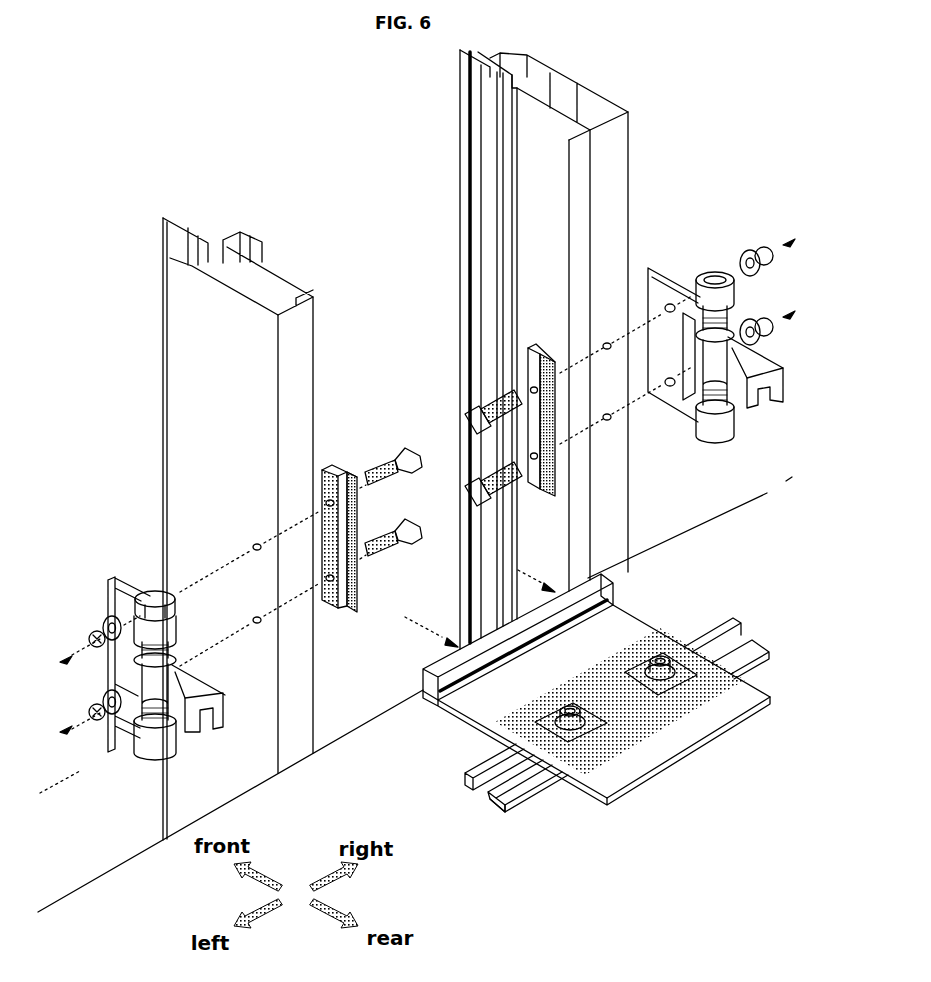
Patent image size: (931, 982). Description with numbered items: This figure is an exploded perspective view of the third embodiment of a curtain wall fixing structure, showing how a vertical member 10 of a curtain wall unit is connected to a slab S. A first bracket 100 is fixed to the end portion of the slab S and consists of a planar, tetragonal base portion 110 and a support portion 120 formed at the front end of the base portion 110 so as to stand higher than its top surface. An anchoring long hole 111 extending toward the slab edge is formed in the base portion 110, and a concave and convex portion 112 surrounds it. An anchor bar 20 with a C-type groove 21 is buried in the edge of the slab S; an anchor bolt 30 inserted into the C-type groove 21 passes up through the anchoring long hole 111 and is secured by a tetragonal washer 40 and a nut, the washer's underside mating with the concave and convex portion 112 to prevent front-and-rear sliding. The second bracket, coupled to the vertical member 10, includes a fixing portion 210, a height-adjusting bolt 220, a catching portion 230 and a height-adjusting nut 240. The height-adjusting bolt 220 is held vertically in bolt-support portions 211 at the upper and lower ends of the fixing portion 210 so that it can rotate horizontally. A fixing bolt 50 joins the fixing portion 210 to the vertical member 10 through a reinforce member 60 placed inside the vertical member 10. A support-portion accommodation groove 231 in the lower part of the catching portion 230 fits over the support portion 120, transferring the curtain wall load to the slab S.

The slab S is at (128, 898).
The vertical member 10 is at (303, 350).
The anchor bar 20 is at (535, 812).
The C-type groove 21 is at (481, 806).
The anchor bolt 30 is at (667, 640).
The tetragonal washer 40 is at (699, 638).
The fixing bolt 50 is at (396, 460).
The reinforce member 60 is at (358, 578).
The first bracket 100 is at (557, 690).
The base portion 110 is at (583, 706).
The anchoring long hole 111 is at (710, 707).
The concave and convex portion 112 is at (665, 712).
The support portion 120 is at (430, 694).
The fixing portion 210 is at (116, 600).
The bolt-support portion 211 is at (116, 642).
The height-adjusting bolt 220 is at (174, 655).
The catching portion 230 is at (178, 669).
The support-portion accommodation groove 231 is at (207, 731).
The height-adjusting nut 240 is at (150, 594).